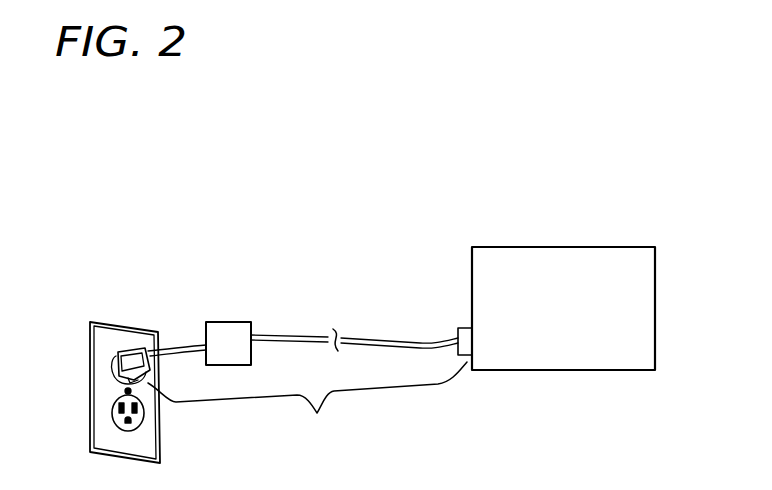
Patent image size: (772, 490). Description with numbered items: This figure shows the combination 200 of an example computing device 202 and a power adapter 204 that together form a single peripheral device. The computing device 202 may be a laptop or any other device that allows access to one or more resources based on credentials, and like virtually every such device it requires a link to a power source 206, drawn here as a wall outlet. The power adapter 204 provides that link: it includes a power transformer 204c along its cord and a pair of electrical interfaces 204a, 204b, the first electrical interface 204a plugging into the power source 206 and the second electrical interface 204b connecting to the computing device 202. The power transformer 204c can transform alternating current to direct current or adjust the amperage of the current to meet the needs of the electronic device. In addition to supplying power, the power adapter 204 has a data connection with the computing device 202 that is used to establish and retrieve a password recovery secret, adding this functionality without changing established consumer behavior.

The combination 200 is at (346, 238).
The computing device 202 is at (653, 302).
The power adapter 204 is at (317, 414).
The electrical interface 204a is at (130, 354).
The electrical interface 204b is at (457, 327).
The power transformer 204c is at (222, 322).
The power source 206 is at (128, 325).